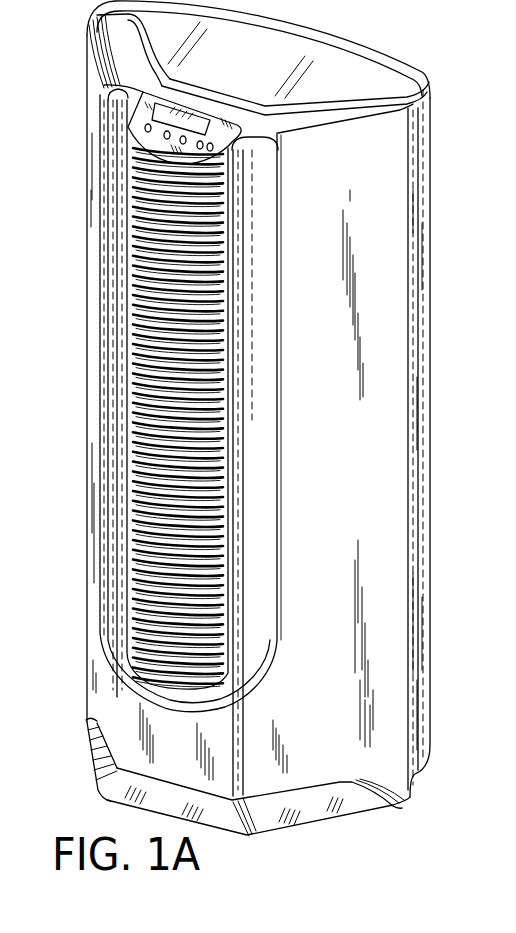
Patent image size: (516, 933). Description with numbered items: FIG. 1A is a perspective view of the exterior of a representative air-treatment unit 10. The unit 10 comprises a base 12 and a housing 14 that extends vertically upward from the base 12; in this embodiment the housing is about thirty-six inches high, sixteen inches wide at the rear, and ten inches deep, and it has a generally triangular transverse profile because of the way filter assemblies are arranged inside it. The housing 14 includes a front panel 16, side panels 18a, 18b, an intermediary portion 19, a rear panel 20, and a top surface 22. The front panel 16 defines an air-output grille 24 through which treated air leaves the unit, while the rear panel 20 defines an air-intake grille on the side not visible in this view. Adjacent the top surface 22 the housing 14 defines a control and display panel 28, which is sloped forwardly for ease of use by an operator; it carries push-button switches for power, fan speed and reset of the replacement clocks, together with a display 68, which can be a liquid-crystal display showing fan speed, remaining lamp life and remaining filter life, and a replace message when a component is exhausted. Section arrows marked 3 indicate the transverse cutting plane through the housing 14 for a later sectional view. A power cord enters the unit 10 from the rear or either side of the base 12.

The air-treatment unit 10 is at (274, 429).
The base 12 is at (272, 828).
The housing 14 is at (410, 263).
The front panel 16 is at (125, 415).
The side panel 18a is at (88, 280).
The side panel 18b is at (387, 297).
The intermediary portion 19 is at (125, 52).
The rear panel 20 is at (353, 47).
The top surface 22 is at (253, 43).
The air-output grille 24 is at (167, 325).
The control and display panel 28 is at (228, 128).
The display 68 is at (188, 113).
The section line for FIG. 3 is at (80, 592).